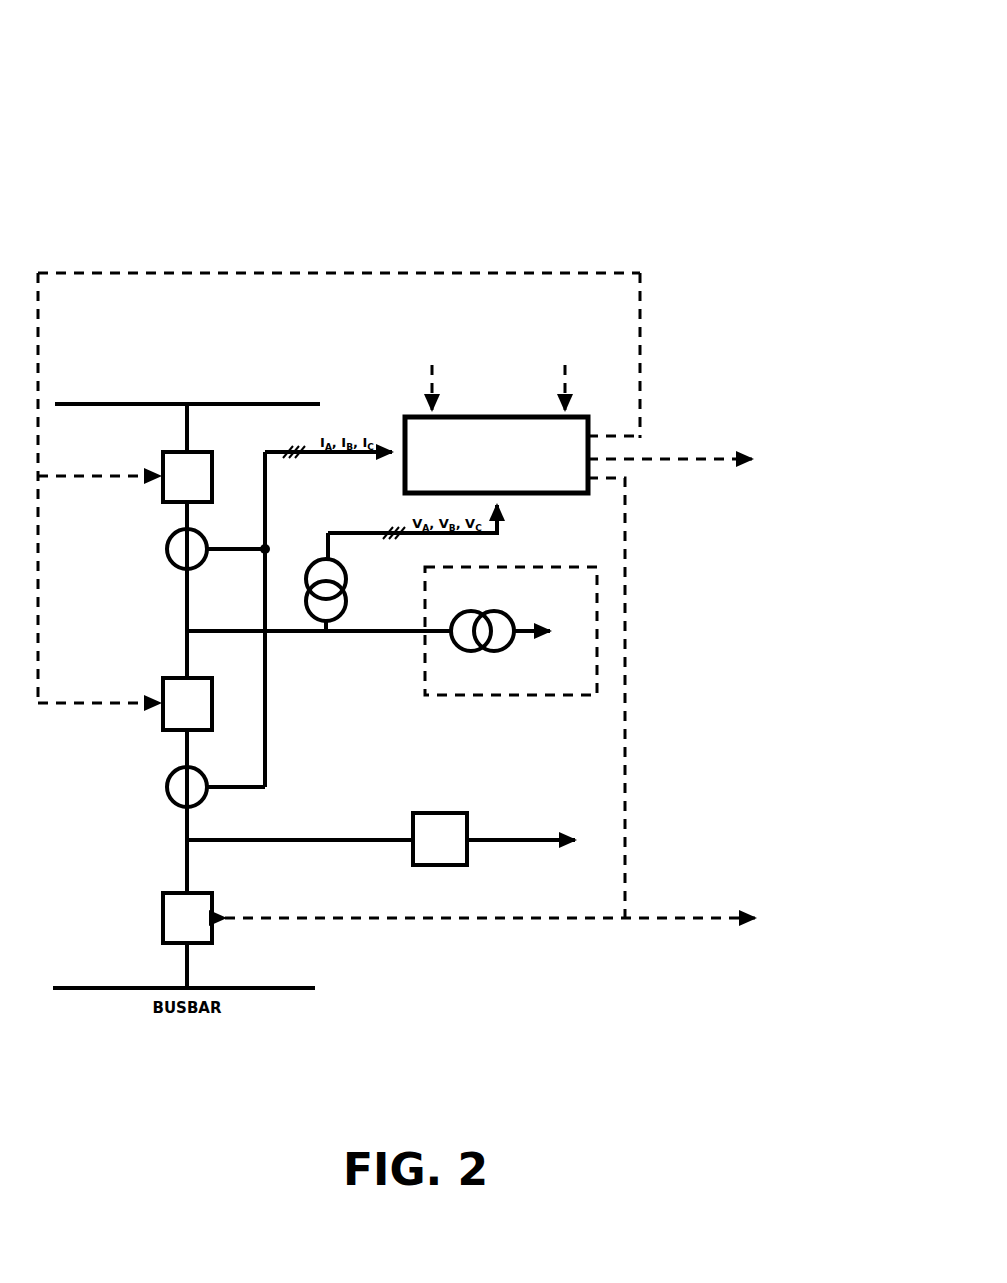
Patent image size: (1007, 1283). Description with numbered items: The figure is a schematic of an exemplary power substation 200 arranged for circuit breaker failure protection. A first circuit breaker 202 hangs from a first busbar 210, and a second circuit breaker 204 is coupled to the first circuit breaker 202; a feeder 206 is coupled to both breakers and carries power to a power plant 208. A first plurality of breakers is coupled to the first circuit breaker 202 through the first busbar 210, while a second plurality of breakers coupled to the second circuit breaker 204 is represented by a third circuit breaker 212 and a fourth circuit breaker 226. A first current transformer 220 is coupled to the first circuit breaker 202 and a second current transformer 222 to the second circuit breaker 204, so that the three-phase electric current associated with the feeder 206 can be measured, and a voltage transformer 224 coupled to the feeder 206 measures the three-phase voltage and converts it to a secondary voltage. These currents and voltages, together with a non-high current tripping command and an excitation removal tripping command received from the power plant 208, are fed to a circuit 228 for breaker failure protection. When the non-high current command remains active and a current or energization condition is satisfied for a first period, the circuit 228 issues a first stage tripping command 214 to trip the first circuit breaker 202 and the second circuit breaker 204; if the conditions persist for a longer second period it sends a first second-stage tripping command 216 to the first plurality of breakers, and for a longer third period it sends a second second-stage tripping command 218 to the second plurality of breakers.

The power substation 200 is at (730, 166).
The first circuit breaker 202 is at (165, 452).
The second circuit breaker 204 is at (165, 680).
The feeder 206 is at (392, 630).
The power plant 208 is at (511, 631).
The first busbar 210 is at (264, 404).
The third circuit breaker 212 is at (165, 893).
The first stage tripping command 214 is at (353, 275).
The first second-stage tripping command 216 is at (735, 460).
The second second-stage tripping command 218 is at (623, 600).
The first current transformer 220 is at (170, 538).
The second current transformer 222 is at (170, 772).
The voltage transformer 224 is at (342, 558).
The fourth circuit breaker 226 is at (440, 813).
The circuit for CBF protection 228 is at (500, 397).